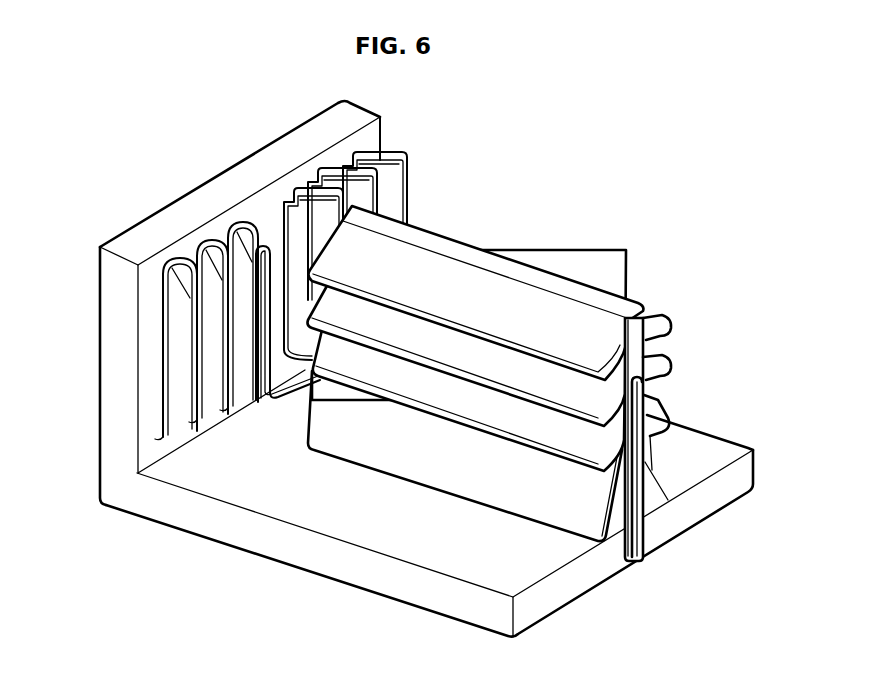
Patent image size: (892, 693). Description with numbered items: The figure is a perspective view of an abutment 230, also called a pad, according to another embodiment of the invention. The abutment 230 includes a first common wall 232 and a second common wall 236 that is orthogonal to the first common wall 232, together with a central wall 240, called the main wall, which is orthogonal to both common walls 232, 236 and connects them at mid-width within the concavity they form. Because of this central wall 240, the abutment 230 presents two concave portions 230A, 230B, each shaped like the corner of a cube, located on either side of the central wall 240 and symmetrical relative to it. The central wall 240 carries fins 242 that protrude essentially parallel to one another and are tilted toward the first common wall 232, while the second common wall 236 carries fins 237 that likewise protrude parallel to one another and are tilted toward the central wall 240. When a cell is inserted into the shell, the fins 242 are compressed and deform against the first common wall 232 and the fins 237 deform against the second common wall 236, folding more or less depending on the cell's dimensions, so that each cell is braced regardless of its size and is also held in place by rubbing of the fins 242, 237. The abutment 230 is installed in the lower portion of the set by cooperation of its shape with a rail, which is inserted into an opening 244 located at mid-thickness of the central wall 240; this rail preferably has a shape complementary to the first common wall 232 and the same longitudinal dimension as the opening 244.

The abutment 230 is at (605, 203).
The first concave portion 230A is at (368, 490).
The second concave portion 230B is at (688, 347).
The first common wall 232 is at (412, 592).
The second common wall 236 is at (253, 176).
The fins 237 is at (252, 362).
The central wall 240 is at (650, 470).
The fins 242 is at (664, 376).
The opening 244 is at (640, 567).